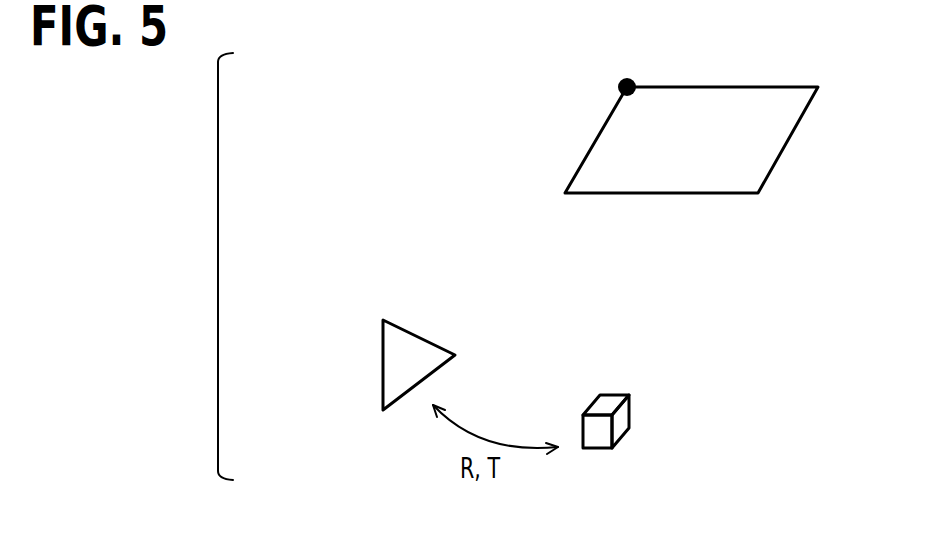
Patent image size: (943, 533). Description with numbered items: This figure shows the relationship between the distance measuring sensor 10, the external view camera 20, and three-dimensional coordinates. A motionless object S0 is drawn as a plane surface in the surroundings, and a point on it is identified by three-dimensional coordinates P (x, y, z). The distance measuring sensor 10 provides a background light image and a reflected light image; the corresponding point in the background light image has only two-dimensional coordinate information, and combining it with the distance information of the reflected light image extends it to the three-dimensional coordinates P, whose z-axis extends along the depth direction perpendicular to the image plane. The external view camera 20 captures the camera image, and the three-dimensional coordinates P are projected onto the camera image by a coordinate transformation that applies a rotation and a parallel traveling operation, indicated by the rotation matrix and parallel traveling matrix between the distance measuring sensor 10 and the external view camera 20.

The distance measuring sensor 10 is at (629, 411).
The external view camera 20 is at (383, 349).
The motionless object S0 is at (779, 84).
The three-dimensional coordinates P is at (629, 77).